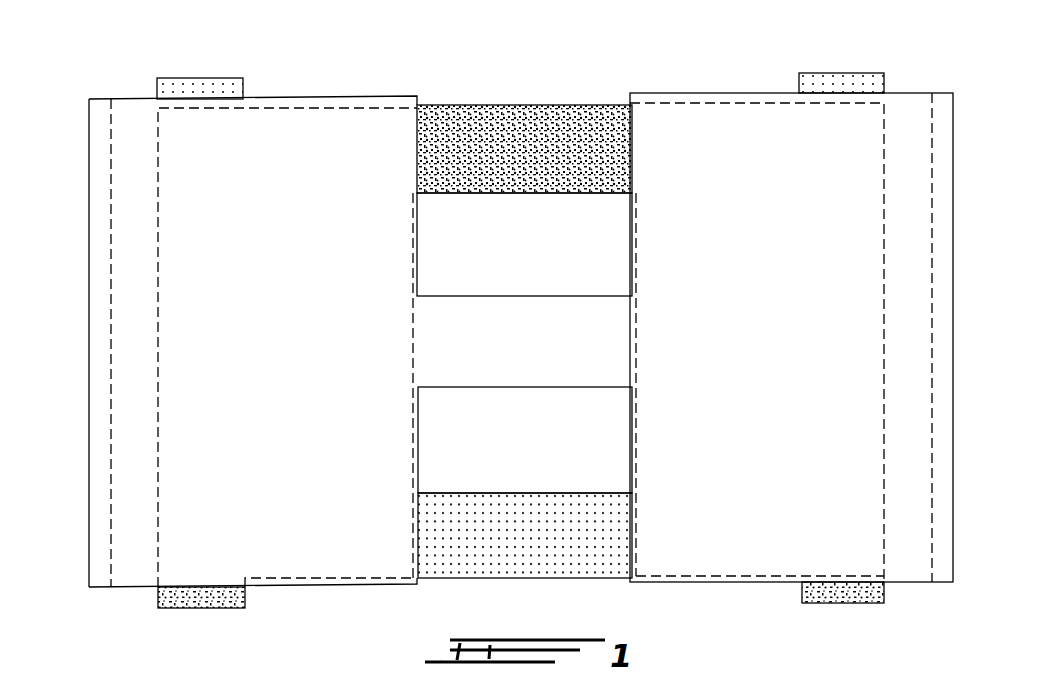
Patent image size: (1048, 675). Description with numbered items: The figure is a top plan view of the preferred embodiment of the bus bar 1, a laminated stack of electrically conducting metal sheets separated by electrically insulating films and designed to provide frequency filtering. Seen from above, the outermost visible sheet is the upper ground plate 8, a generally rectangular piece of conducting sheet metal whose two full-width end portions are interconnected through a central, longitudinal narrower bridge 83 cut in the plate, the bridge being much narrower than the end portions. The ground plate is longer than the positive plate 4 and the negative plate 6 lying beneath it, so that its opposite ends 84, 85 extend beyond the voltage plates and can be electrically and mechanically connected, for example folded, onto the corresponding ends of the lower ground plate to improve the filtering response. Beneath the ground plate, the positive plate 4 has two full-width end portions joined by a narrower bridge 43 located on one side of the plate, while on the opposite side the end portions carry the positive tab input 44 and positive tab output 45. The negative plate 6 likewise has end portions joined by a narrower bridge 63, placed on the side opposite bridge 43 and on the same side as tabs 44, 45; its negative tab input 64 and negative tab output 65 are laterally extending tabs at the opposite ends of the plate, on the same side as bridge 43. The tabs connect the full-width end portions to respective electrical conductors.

The bus bar 1 is at (523, 315).
The positive plate 4 is at (534, 506).
The negative plate 6 is at (525, 104).
The upper ground plate 8 is at (220, 317).
The bridge 43 is at (525, 523).
The positive tab input 44 is at (196, 92).
The positive tab output 45 is at (869, 90).
The bridge 63 is at (535, 173).
The negative tab input 64 is at (162, 596).
The negative tab output 65 is at (884, 592).
The bridge 83 is at (522, 335).
The end of ground plate 84 is at (100, 343).
The end of ground plate 85 is at (943, 342).